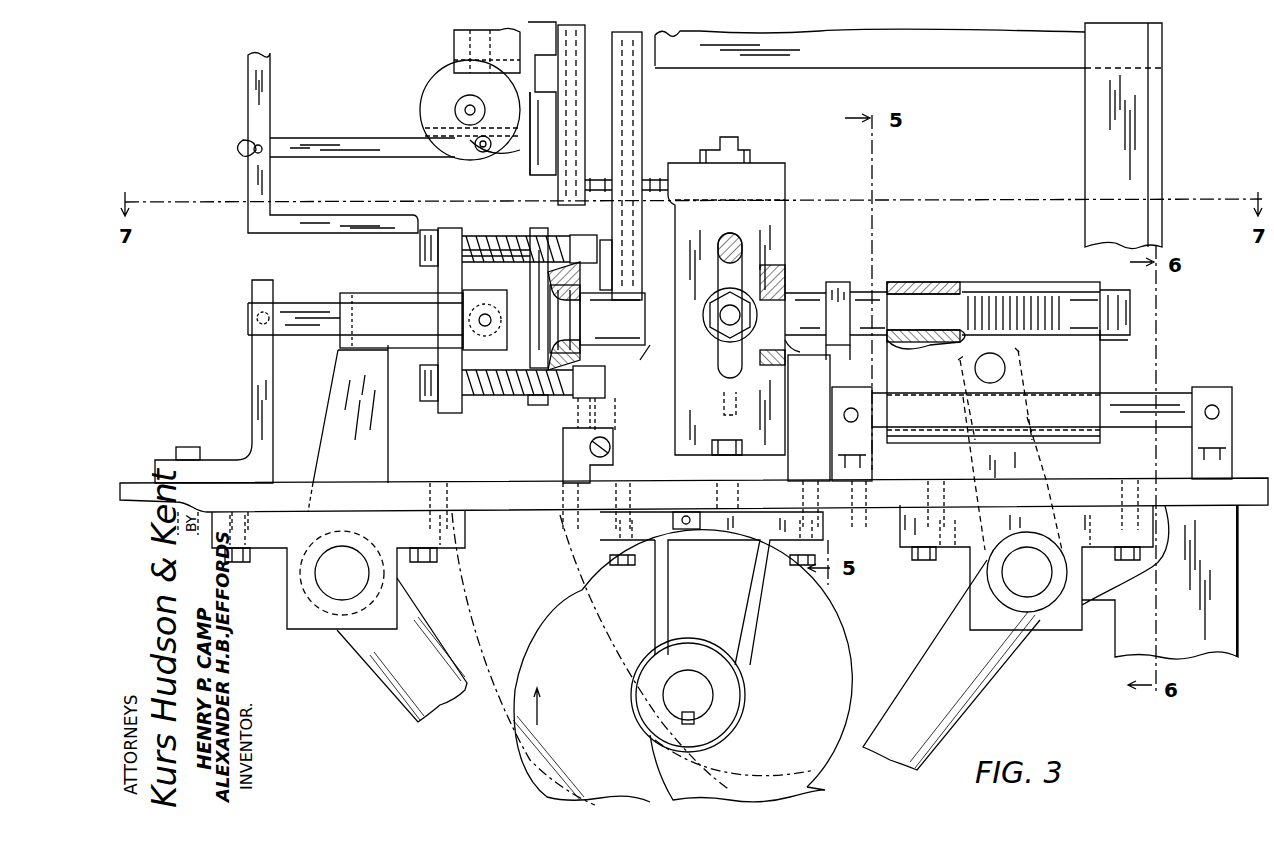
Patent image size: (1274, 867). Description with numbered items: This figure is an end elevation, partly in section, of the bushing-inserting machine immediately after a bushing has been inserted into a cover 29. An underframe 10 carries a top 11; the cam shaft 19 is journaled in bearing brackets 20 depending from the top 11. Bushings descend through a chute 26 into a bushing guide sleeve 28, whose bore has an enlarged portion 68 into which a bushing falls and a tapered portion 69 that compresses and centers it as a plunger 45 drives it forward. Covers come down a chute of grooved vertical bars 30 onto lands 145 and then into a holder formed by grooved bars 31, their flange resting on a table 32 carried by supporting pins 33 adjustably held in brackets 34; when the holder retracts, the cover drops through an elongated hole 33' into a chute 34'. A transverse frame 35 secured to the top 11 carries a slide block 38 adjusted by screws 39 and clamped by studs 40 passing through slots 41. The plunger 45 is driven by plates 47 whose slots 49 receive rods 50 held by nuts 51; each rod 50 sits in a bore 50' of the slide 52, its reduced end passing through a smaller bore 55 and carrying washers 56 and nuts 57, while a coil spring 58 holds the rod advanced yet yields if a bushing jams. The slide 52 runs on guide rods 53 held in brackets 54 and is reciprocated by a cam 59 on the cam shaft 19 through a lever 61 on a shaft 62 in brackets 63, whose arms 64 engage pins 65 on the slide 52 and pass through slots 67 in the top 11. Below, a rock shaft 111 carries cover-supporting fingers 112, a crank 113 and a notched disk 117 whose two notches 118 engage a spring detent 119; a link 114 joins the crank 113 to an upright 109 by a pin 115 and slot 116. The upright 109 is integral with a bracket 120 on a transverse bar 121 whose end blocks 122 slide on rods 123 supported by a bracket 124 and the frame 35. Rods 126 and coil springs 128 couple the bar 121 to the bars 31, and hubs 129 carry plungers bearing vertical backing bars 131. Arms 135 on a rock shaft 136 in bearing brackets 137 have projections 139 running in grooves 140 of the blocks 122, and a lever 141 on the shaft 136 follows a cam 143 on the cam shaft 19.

The underframe 10 is at (1228, 600).
The top 11 is at (1250, 483).
The cam shaft 19 is at (705, 696).
The bearing brackets 20 is at (748, 598).
The chute 26 is at (642, 228).
The bushing guide sleeve 28 is at (790, 348).
The cover 29 is at (538, 356).
The vertical bars 30 is at (578, 112).
The bars 31 is at (586, 235).
The table 32 is at (612, 420).
The supporting pins 33 is at (551, 422).
The elongated hole 33' is at (523, 628).
The brackets 34 is at (571, 455).
The chute 34' is at (624, 652).
The transversely extending frame 35 is at (782, 183).
The slide block 38 is at (785, 270).
The adjusting screws 39 is at (738, 137).
The studs 40 is at (724, 317).
The slots 41 is at (745, 255).
The plunger 45 is at (612, 348).
The plates 47 is at (836, 282).
The slot 49 is at (856, 345).
The cylindrical rods 50 is at (875, 296).
The bore 50' is at (923, 300).
The nuts 51 is at (800, 295).
The slide 52 is at (1098, 378).
The guide rods 53 is at (1145, 423).
The brackets 54 is at (1196, 436).
The bore 55 is at (1082, 290).
The washers 56 is at (1105, 340).
The nuts 57 is at (1128, 285).
The coil spring 58 is at (1000, 290).
The cam 59 is at (810, 756).
The lever 61 is at (982, 690).
The shaft 62 is at (1015, 573).
The brackets 63 is at (905, 528).
The arms 64 is at (975, 460).
The pins 65 is at (1006, 366).
The slots 67 is at (1084, 480).
The enlarged bore portion 68 is at (618, 352).
The tapered bore portion 69 is at (612, 319).
The upright 109 is at (258, 95).
The rock shaft 111 is at (478, 108).
The fingers 112 is at (498, 168).
The crank 113 is at (430, 127).
The link 114 is at (318, 128).
The pin 115 is at (255, 155).
The slot 116 is at (246, 145).
The disk 117 is at (432, 102).
The notches 118 is at (455, 68).
The spring detent 119 is at (552, 70).
The bracket 120 is at (352, 195).
The transverse bar 121 is at (452, 412).
The end blocks 122 is at (352, 290).
The supporting and guiding rods 123 is at (328, 338).
The bracket 124 is at (255, 367).
The rods 126 is at (480, 240).
The coil spring 128 is at (512, 240).
The hubs 129 is at (478, 284).
The vertical bars 131 is at (538, 405).
The arms 135 is at (336, 388).
The rock shaft 136 is at (358, 575).
The bearing brackets 137 is at (290, 577).
The cylindrical projections 139 is at (384, 290).
The vertical grooves 140 is at (338, 300).
The lever 141 is at (440, 621).
The cam 143 is at (525, 750).
The lands 145 is at (625, 245).